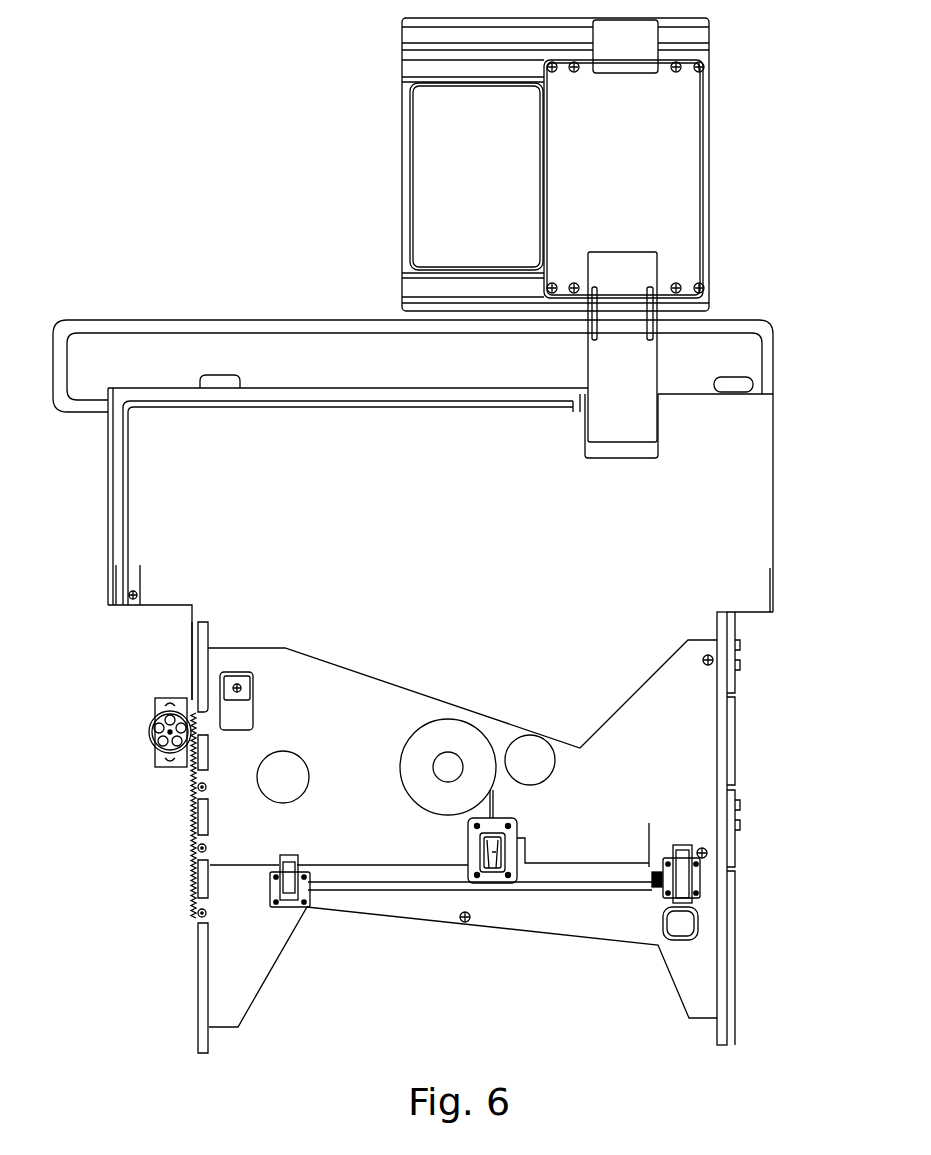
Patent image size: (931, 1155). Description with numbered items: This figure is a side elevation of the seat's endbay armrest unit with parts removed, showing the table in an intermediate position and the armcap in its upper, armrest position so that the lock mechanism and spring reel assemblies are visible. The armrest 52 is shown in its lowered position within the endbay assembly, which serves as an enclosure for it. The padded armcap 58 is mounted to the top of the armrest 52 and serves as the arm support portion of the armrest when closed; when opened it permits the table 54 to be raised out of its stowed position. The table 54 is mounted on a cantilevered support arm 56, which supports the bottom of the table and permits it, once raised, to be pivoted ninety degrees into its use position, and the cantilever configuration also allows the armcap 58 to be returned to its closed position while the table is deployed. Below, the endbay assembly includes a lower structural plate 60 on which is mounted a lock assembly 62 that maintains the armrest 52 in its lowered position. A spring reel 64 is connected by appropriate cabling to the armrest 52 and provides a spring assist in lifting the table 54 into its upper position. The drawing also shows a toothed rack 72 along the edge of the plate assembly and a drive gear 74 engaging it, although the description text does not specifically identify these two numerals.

The outboard armrest 52 is at (78, 522).
The table 54 is at (453, 178).
The cantilevered support arm 56 is at (640, 365).
The padded armcap 58 is at (98, 330).
The lower structural plate 60 is at (720, 764).
The lock assembly 62 is at (428, 890).
The spring reel 64 is at (193, 785).
The rack 72 is at (190, 882).
The drive gear 74 is at (150, 738).